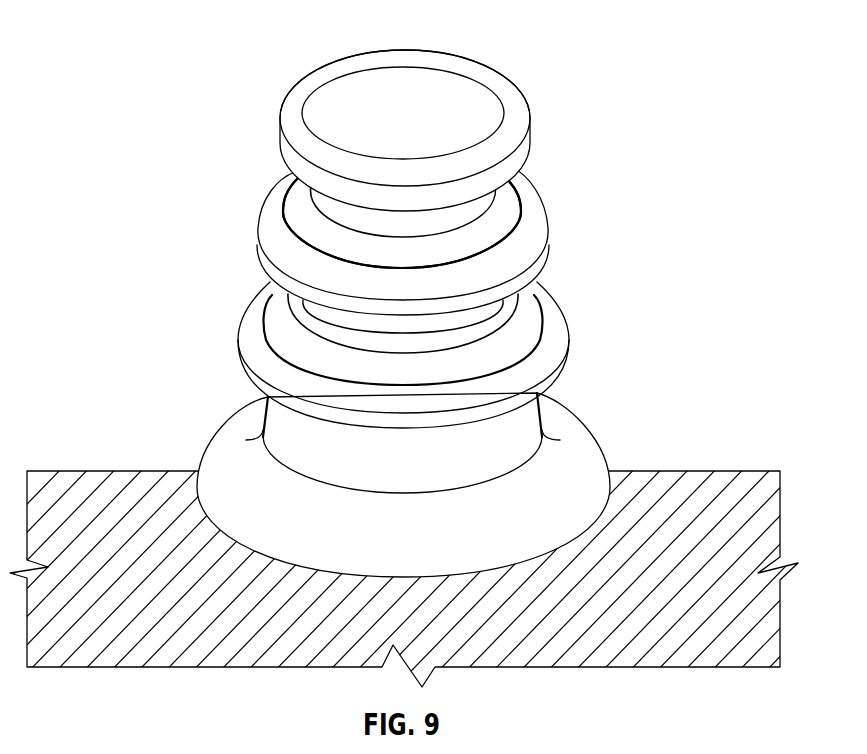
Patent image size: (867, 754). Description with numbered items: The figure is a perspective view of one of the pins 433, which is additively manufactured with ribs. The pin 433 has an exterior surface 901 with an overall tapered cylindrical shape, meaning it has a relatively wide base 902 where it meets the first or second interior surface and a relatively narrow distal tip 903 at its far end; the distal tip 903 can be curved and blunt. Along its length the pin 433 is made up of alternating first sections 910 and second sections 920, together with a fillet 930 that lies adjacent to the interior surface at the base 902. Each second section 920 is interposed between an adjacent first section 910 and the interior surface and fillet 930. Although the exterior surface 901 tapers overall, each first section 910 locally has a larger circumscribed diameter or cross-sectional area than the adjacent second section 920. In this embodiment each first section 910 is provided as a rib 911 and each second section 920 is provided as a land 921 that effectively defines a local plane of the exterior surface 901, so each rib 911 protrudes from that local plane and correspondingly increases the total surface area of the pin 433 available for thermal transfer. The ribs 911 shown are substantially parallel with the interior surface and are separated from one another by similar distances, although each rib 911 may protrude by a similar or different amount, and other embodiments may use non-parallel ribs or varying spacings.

The distal tip 903 is at (410, 96).
The pin 433 is at (290, 96).
The rib 911 is at (293, 129).
The first section 910 is at (531, 119).
The second section 920 is at (478, 201).
The exterior surface 901 is at (312, 203).
The land 921 is at (388, 193).
The base 902 is at (214, 432).
The fillet 930 is at (544, 424).